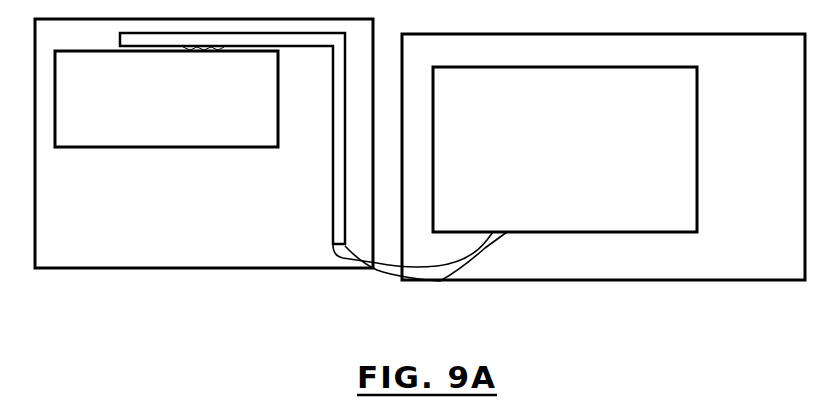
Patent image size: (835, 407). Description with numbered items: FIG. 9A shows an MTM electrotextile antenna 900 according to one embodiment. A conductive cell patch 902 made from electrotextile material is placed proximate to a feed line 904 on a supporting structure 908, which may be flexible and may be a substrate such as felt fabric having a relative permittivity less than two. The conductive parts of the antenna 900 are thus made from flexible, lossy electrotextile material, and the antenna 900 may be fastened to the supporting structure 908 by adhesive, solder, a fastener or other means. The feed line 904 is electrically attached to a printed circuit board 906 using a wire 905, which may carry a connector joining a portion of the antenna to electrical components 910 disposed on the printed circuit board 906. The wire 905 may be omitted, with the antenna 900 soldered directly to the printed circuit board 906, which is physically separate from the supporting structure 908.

The MTM electrotextile antenna 900 is at (204, 176).
The conductive cell patch 902 is at (190, 160).
The feed line 904 is at (323, 164).
The wire 905 is at (383, 283).
The printed circuit board 906 is at (621, 296).
The supporting structure 908 is at (128, 284).
The electrical components 910 is at (719, 189).